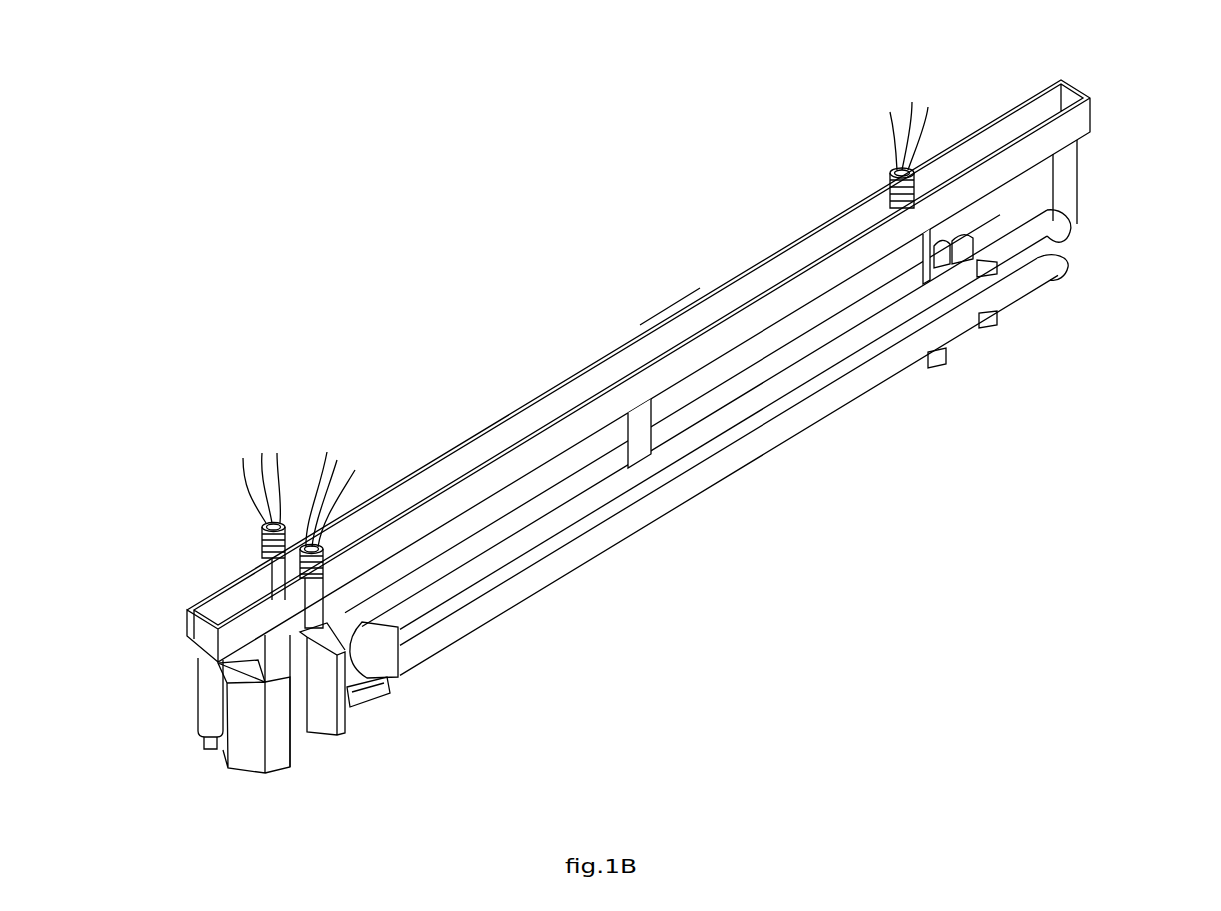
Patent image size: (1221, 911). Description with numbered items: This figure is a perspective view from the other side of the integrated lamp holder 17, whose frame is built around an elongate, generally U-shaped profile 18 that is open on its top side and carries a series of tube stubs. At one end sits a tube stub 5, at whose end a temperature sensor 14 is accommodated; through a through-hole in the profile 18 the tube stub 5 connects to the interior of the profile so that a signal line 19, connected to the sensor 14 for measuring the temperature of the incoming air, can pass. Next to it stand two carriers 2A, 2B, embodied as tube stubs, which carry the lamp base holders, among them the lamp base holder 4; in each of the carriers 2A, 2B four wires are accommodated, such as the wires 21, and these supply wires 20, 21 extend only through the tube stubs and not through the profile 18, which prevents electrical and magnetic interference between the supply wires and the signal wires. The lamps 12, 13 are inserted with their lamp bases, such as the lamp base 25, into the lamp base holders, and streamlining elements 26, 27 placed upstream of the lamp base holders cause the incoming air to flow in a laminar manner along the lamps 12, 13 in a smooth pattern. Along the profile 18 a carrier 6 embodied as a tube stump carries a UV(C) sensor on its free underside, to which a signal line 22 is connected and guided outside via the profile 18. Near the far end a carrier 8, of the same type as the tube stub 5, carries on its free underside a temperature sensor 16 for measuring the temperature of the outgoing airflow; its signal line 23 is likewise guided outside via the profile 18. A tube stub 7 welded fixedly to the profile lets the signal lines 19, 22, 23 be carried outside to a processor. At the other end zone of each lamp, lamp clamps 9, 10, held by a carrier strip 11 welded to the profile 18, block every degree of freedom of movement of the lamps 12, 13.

The lamp holder 17 is at (497, 298).
The U-shaped profile 18 is at (665, 325).
The lamp 12 is at (765, 370).
The lamp 13 is at (713, 440).
The temperature sensor 16 is at (1072, 230).
The carrier 6 is at (641, 445).
The lamp clamp 9 is at (880, 286).
The tube stub 7 is at (893, 192).
The signal line 19 is at (890, 112).
The signal line 22 is at (912, 102).
The signal line 23 is at (928, 107).
The carrier 8 is at (1067, 165).
The lamp clamp 10 is at (985, 262).
The carrier strip 11 is at (933, 262).
The carrier 2A is at (313, 602).
The carrier 2B is at (280, 648).
The supply wires 20 is at (256, 467).
The wires 21 is at (343, 467).
The tube stub 5 is at (207, 685).
The temperature sensor 14 is at (212, 746).
The streamlining element 26 is at (242, 752).
The streamlining element 27 is at (327, 722).
The lamp base holder 4 is at (360, 703).
The lamp base 25 is at (382, 685).